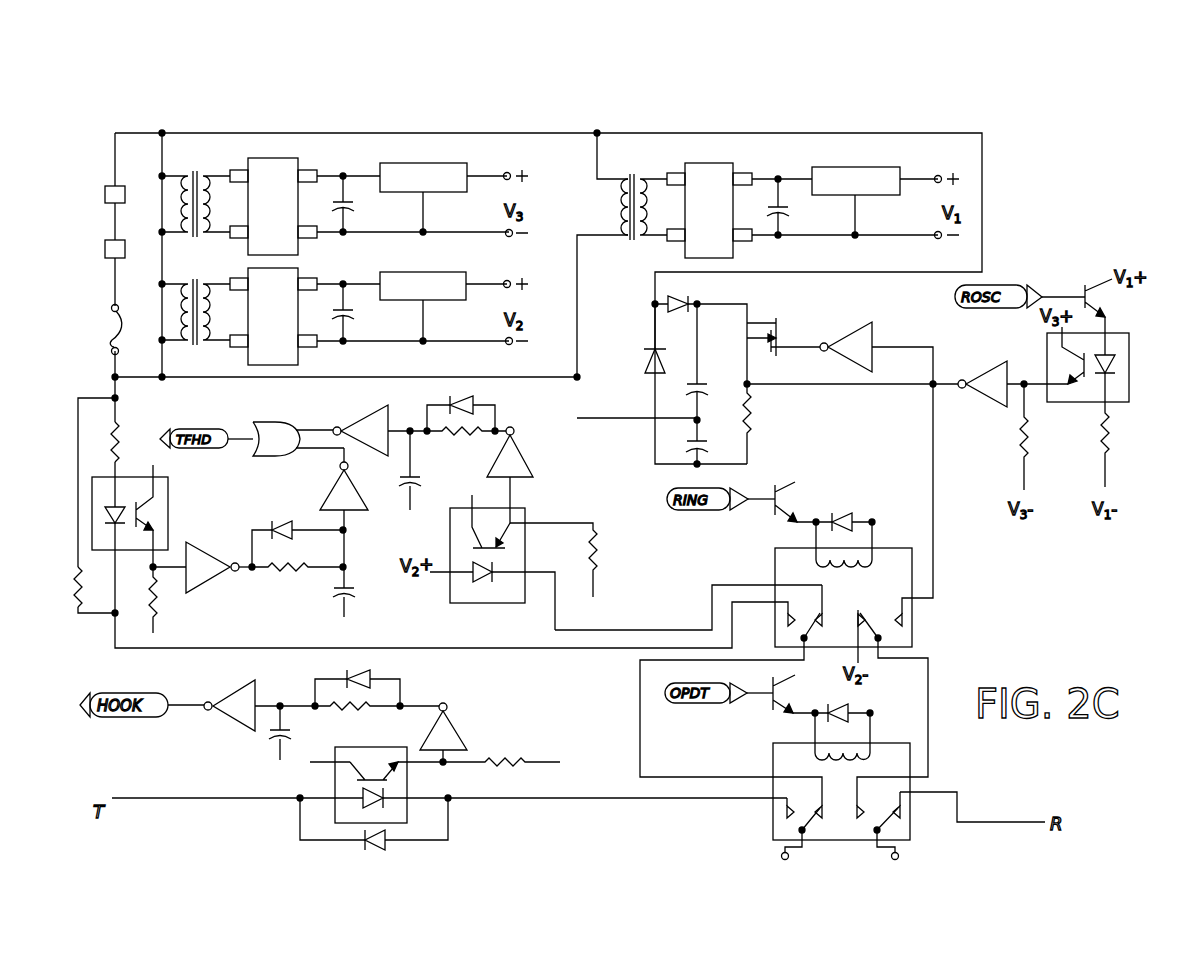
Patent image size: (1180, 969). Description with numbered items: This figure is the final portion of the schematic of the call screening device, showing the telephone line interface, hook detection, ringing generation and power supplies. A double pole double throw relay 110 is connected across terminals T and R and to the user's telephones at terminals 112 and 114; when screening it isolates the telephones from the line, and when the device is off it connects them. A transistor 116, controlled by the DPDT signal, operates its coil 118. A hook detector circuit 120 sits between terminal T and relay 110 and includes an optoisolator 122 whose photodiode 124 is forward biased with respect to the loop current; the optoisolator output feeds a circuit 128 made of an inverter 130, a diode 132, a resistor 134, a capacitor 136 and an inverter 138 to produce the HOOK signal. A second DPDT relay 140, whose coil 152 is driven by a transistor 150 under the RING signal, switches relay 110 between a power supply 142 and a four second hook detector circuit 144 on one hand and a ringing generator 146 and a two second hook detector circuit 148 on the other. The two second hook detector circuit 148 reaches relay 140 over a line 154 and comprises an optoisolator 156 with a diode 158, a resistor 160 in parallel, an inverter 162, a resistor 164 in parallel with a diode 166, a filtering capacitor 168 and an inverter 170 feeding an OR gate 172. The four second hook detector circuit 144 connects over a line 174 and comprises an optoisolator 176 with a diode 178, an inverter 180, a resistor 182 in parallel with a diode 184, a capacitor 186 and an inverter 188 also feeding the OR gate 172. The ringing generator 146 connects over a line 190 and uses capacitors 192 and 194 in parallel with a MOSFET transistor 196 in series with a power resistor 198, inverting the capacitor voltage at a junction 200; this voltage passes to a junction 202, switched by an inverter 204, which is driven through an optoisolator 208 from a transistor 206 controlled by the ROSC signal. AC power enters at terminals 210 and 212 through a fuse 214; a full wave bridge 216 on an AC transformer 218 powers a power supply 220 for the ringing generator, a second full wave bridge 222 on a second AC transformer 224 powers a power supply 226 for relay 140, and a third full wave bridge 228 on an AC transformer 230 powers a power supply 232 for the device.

The relay 110 is at (908, 830).
The terminal 112 is at (781, 857).
The terminal 114 is at (899, 857).
The transistor 116 is at (768, 713).
The coil 118 is at (870, 748).
The hook detector circuit 120 is at (250, 742).
The optoisolator 122 is at (362, 747).
The photodiode 124 is at (386, 797).
The circuit 128 is at (460, 698).
The inverter 130 is at (468, 735).
The diode 132 is at (372, 679).
The resistor 134 is at (368, 703).
The capacitor 136 is at (290, 737).
The inverter 138 is at (238, 688).
The second DPDT relay 140 is at (915, 637).
The power supply 142 is at (400, 352).
The four second hook detector circuit 144 is at (540, 491).
The ringing generator 146 is at (890, 403).
The two second hook detector circuit 148 is at (186, 526).
The transistor 150 is at (764, 511).
The coil 152 is at (866, 553).
The line 154 is at (603, 648).
The optoisolator 156 is at (150, 470).
The diode 158 is at (118, 505).
The resistor 160 is at (88, 600).
The inverter 162 is at (206, 586).
The resistor 164 is at (290, 581).
The diode 166 is at (278, 521).
The capacitor 168 is at (355, 594).
The inverter 170 is at (360, 512).
The OR gate 172 is at (285, 422).
The line 174 is at (666, 630).
The optoisolator 176 is at (468, 604).
The diode 178 is at (483, 586).
The inverter 180 is at (525, 461).
The resistor 182 is at (461, 437).
The diode 184 is at (476, 405).
The capacitor 186 is at (421, 485).
The inverter 188 is at (372, 408).
The line 190 is at (934, 508).
The capacitor 192 is at (702, 383).
The capacitor 194 is at (702, 456).
The MOSFET transistor 196 is at (778, 328).
The power resistor 198 is at (755, 407).
The junction 200 is at (755, 386).
The junction 202 is at (930, 392).
The inverter 204 is at (985, 405).
The transistor 206 is at (1085, 283).
The optoisolator 208 is at (1129, 357).
The terminal 210 is at (105, 195).
The terminal 212 is at (105, 250).
The fuse 214 is at (110, 337).
The full wave bridge 216 is at (283, 162).
The AC transformer 218 is at (198, 186).
The power supply 220 is at (445, 165).
The second full wave bridge 222 is at (298, 357).
The second AC transformer 224 is at (192, 347).
The power supply 226 is at (447, 273).
The third full wave bridge 228 is at (723, 163).
The AC transformer 230 is at (632, 175).
The power supply 232 is at (862, 167).